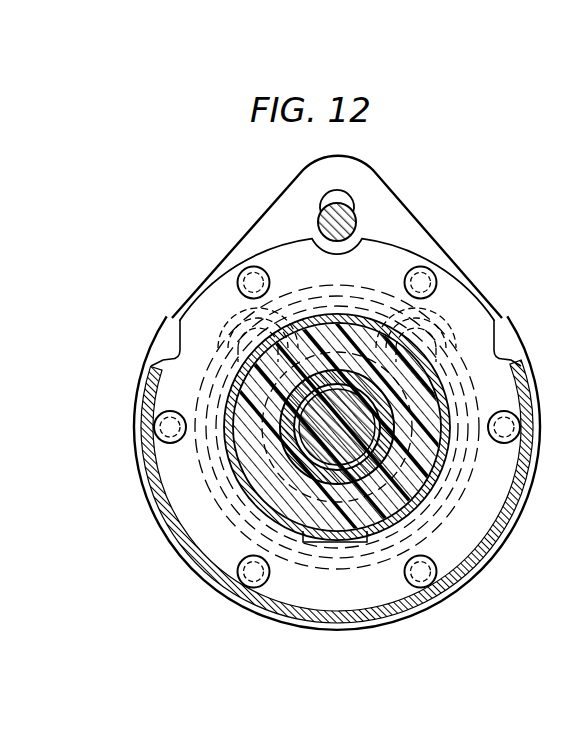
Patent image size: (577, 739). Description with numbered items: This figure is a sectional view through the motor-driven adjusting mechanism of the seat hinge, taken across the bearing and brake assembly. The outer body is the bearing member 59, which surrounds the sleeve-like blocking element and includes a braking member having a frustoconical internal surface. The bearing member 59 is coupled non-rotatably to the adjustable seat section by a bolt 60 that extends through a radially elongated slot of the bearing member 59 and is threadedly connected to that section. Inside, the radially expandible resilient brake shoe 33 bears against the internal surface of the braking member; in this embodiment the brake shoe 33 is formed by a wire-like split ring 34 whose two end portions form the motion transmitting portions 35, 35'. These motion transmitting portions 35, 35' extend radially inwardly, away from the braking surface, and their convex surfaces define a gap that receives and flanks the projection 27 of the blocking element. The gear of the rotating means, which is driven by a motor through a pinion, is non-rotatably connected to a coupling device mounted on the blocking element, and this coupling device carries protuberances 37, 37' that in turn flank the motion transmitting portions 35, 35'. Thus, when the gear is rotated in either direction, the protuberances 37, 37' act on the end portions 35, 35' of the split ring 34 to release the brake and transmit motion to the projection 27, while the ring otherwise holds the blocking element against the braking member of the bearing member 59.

The projection 27 is at (352, 312).
The brake shoe 33 is at (127, 567).
The split ring 34 is at (232, 520).
The motion transmitting portion 35 is at (478, 321).
The motion transmitting portion 35' is at (191, 322).
The protuberance 37 is at (449, 294).
The protuberance 37' is at (222, 294).
The bearing member 59 is at (293, 224).
The bolt 60 is at (357, 222).